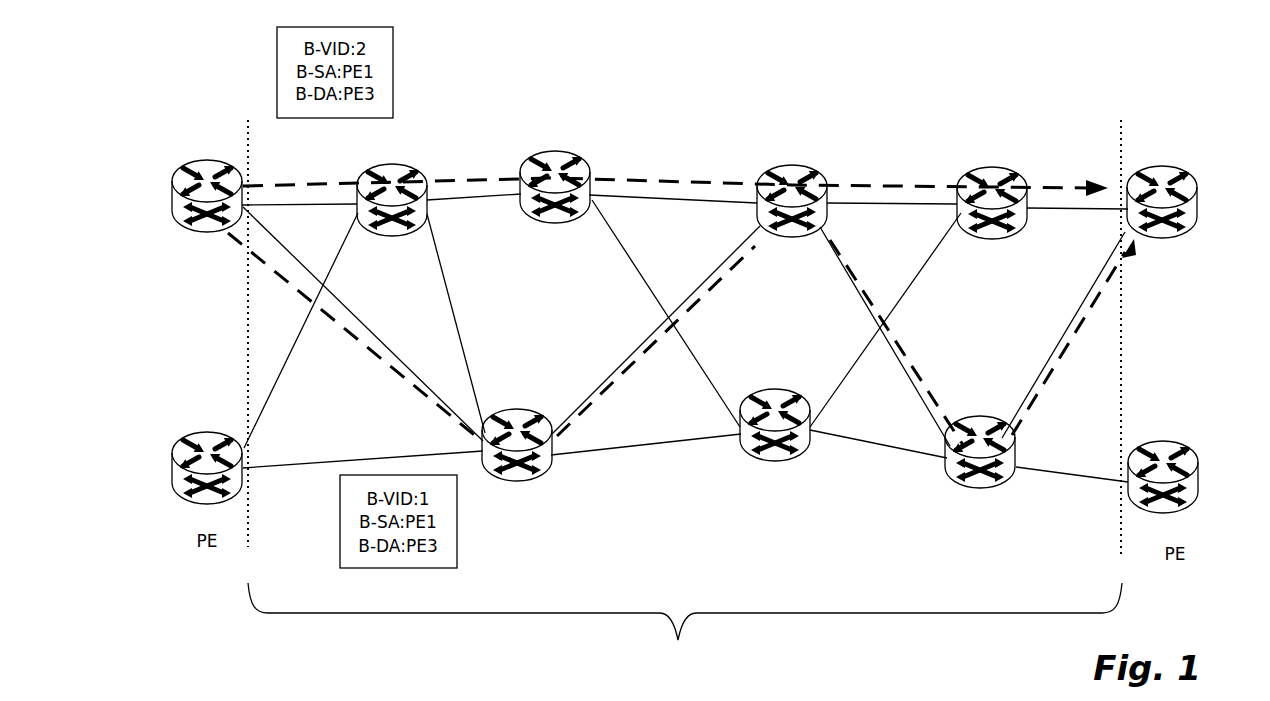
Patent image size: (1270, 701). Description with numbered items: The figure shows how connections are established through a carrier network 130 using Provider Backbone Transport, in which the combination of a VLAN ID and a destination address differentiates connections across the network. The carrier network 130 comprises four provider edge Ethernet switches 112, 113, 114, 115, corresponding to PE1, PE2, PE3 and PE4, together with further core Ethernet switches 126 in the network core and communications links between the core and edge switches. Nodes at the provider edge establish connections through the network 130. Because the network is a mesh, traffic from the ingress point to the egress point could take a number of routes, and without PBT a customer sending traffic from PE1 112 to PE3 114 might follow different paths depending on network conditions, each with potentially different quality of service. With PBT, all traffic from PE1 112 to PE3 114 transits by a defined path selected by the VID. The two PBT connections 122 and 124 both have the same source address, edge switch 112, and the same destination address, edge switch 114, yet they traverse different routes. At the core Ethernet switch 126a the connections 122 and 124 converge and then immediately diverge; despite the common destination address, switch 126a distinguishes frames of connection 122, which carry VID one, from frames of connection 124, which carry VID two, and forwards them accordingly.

The provider edge Ethernet switch 112 is at (188, 167).
The provider edge Ethernet switch 113 is at (176, 445).
The provider edge Ethernet switch 114 is at (1175, 166).
The provider edge Ethernet switch 115 is at (1175, 440).
The PBT connection 122 is at (358, 368).
The PBT connection 124 is at (300, 176).
The core Ethernet switch 126 is at (400, 164).
The core Ethernet switch 126a is at (795, 164).
The carrier network 130 is at (685, 630).